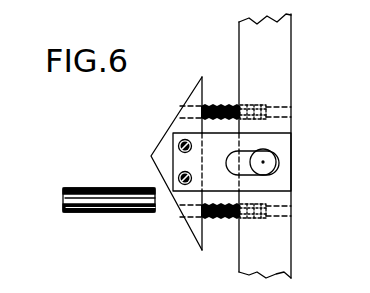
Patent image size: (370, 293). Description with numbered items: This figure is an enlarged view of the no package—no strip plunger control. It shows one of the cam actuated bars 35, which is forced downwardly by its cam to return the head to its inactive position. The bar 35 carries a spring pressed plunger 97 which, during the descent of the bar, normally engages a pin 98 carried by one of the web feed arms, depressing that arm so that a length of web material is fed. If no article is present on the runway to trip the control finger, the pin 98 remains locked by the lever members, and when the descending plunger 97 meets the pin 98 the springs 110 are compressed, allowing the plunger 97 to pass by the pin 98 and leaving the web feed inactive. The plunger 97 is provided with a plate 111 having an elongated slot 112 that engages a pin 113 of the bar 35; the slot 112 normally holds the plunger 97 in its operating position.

The cam actuated bar 35 is at (285, 250).
The spring pressed plunger 97 is at (157, 147).
The pin 98 is at (111, 213).
The spring 110 is at (216, 103).
The plate 111 is at (280, 142).
The elongated slot 112 is at (250, 177).
The pin 113 is at (264, 162).